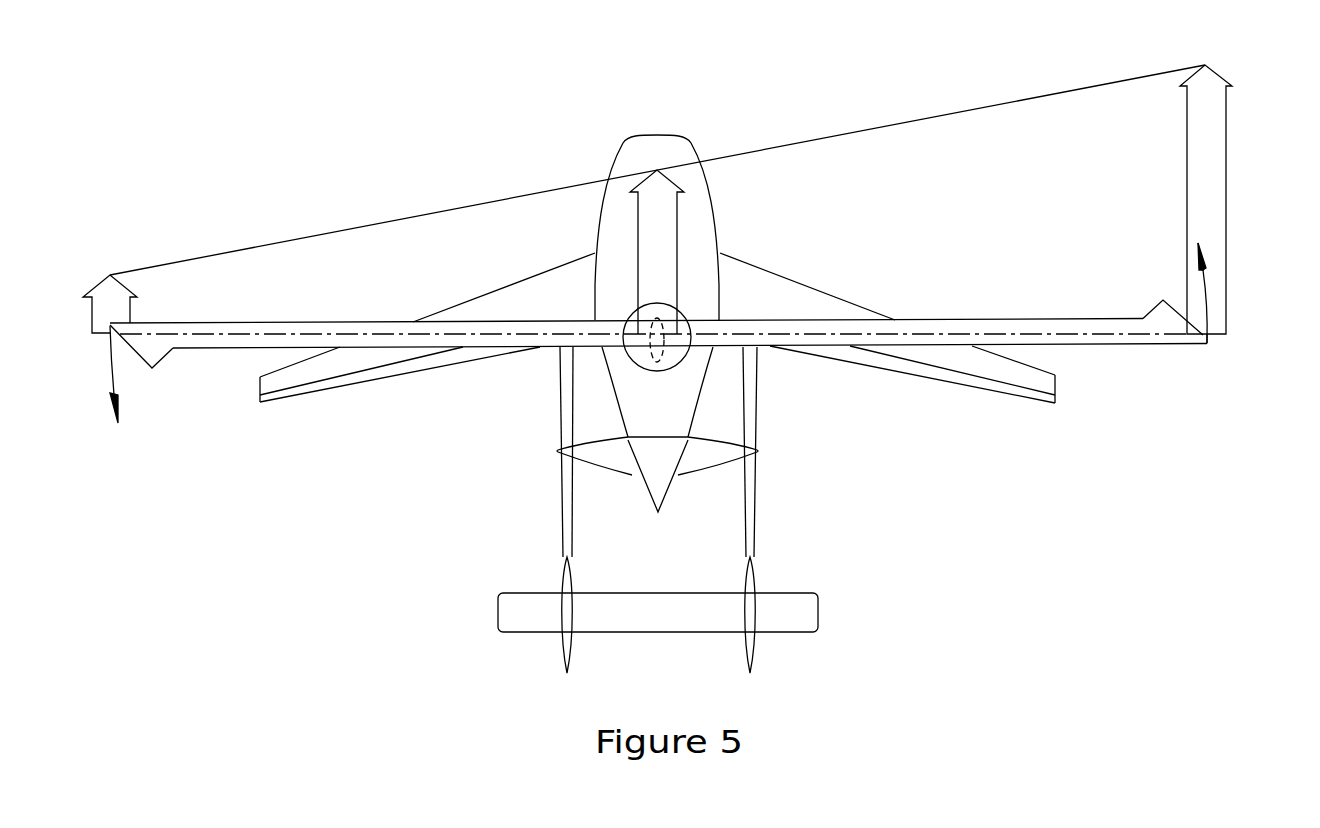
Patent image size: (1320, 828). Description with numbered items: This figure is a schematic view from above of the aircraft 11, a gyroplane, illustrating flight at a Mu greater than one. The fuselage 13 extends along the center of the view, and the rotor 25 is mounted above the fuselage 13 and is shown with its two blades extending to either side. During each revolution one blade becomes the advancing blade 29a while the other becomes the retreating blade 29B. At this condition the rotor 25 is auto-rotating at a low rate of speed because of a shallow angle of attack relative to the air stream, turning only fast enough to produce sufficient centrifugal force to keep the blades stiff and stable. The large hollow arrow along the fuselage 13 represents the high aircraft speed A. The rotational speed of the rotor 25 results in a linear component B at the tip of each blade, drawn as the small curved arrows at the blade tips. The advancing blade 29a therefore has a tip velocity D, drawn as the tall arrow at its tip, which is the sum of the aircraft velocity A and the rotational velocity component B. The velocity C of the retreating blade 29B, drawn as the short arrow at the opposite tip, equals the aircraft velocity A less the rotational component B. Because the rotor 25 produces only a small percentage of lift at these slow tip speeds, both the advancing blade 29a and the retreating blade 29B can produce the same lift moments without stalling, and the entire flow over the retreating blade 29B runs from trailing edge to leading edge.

The aircraft 11 is at (593, 133).
The fuselage 13 is at (708, 380).
The rotor 25 is at (1037, 345).
The advancing blade 29a is at (1118, 332).
The retreating blade 29B is at (209, 345).
The aircraft speed A is at (677, 187).
The linear component of rotational speed B is at (107, 375).
The velocity of retreating blade C is at (85, 293).
The tip velocity of advancing blade D is at (1227, 131).